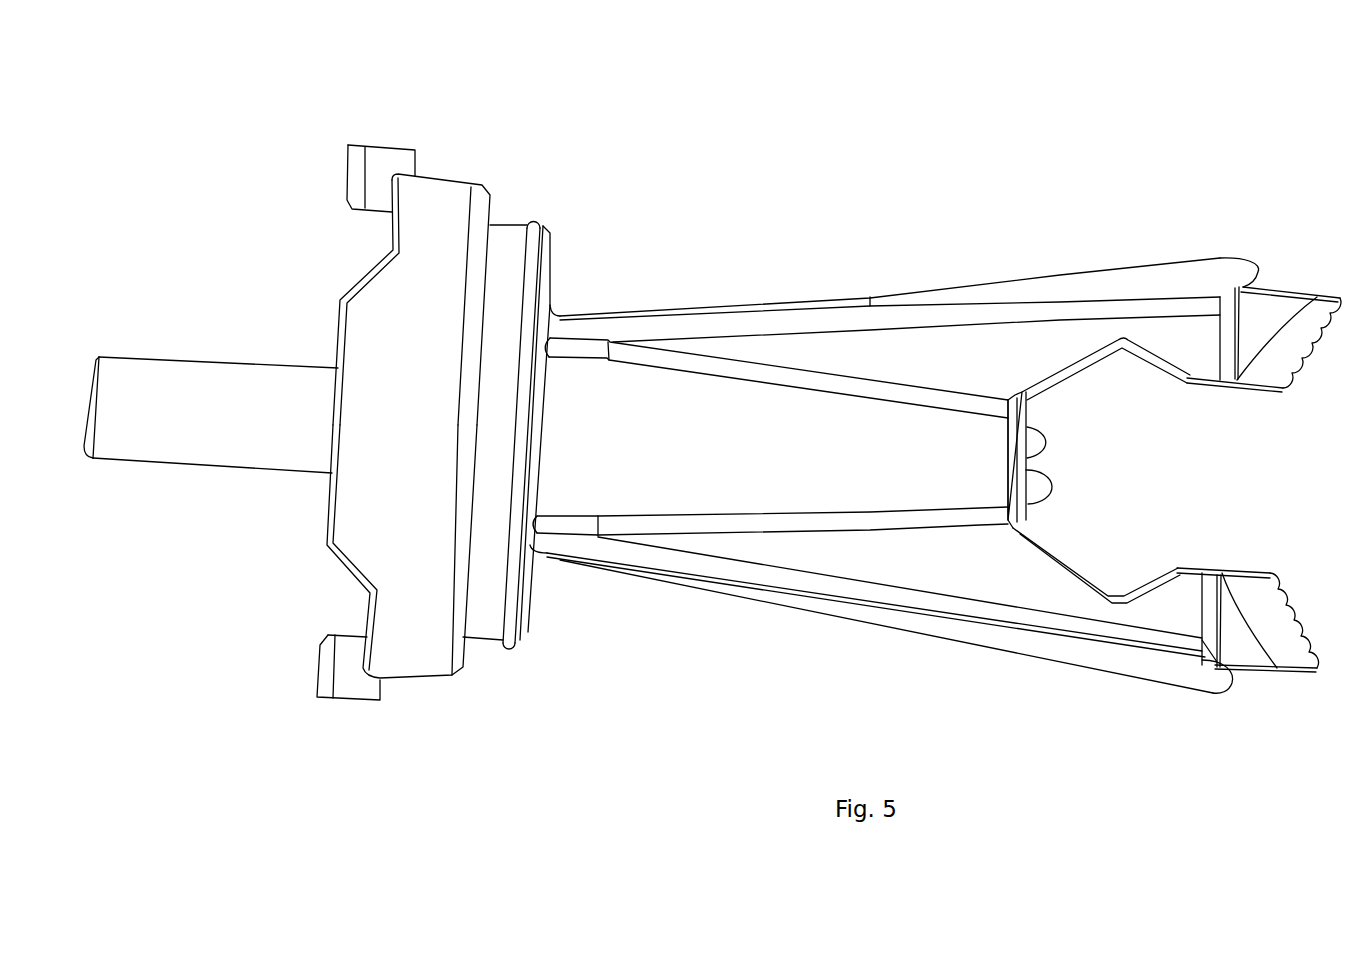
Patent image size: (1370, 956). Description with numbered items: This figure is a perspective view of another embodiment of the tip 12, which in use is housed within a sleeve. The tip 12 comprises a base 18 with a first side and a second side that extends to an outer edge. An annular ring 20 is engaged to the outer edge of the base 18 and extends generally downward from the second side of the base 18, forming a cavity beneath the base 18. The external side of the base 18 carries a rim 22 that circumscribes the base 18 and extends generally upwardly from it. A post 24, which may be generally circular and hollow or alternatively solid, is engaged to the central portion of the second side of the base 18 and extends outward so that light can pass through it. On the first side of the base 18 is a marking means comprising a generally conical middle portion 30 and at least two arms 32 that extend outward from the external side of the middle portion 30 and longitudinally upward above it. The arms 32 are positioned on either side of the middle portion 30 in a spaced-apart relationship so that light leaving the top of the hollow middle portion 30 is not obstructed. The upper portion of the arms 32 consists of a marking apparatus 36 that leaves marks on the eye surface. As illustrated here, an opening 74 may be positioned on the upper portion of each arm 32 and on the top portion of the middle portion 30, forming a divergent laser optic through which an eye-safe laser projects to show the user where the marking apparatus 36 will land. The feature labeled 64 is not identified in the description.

The tip 12 is at (817, 190).
The base 18 is at (500, 177).
The annular ring 20 is at (480, 618).
The rim 22 is at (443, 200).
The post 24 is at (172, 387).
The middle portion 30 is at (780, 410).
The arm 32 is at (992, 347).
The marking apparatus 36 is at (1315, 300).
The mounting tab 64 is at (367, 177).
The marking apparatus opening 74 is at (552, 240).